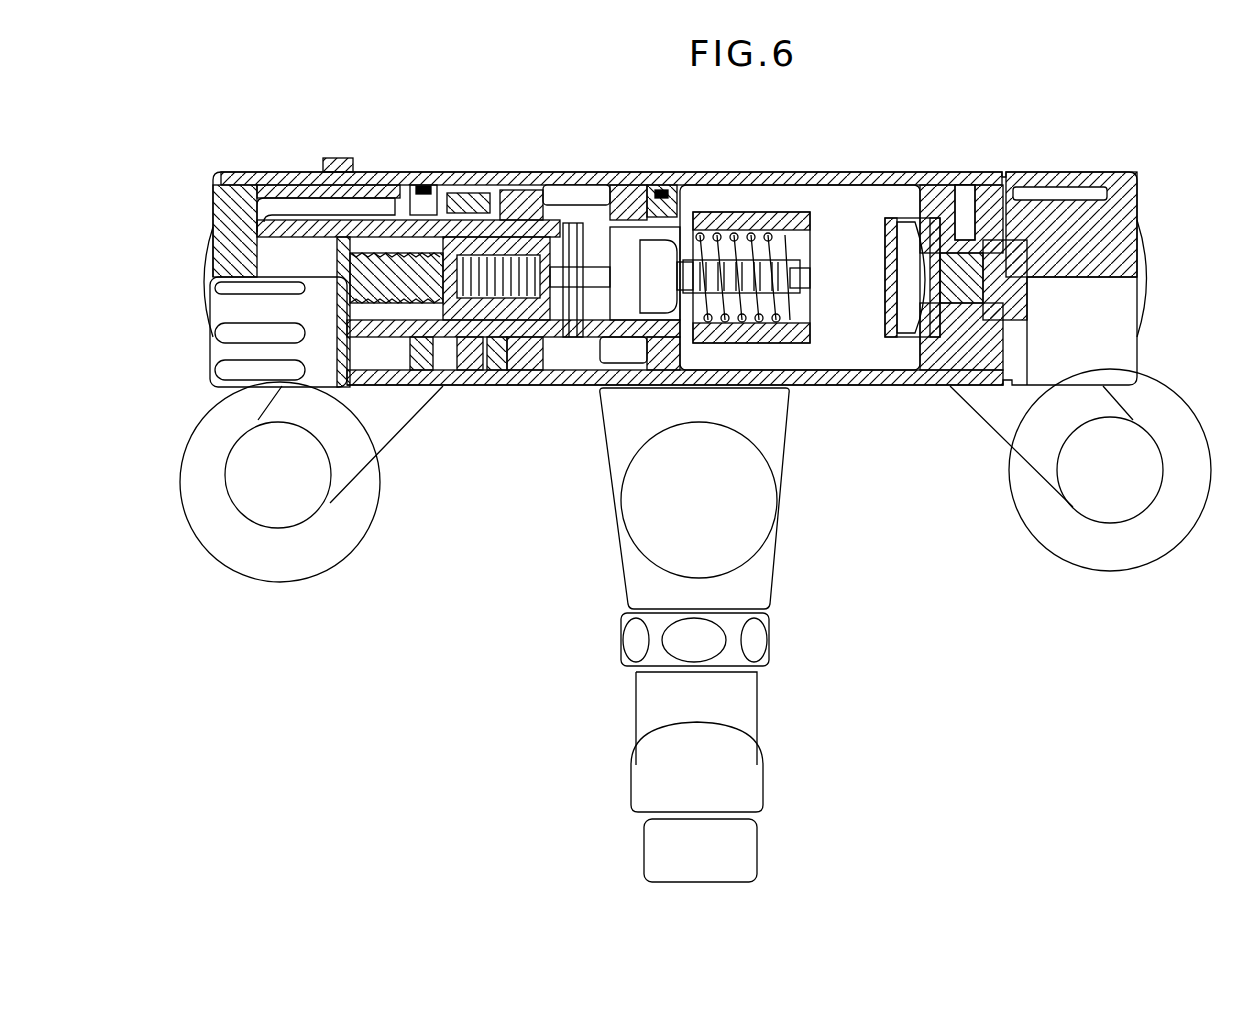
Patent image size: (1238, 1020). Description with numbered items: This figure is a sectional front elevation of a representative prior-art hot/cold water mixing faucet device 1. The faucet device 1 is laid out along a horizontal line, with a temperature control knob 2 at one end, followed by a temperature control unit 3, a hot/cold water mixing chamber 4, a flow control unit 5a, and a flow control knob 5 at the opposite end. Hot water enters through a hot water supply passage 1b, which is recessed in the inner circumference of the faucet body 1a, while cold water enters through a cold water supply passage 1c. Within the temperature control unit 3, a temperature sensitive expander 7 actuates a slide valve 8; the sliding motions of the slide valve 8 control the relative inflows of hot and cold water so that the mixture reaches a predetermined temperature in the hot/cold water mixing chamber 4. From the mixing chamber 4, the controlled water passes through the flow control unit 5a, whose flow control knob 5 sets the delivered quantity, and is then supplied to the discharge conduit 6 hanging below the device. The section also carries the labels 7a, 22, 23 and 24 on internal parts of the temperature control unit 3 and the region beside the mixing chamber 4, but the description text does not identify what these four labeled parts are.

The hot/cold water mixing faucet device 1 is at (1105, 142).
The faucet body 1a is at (822, 180).
The hot water supply passage 1b is at (655, 195).
The cold water supply passage 1c is at (580, 197).
The temperature control knob 2 is at (225, 303).
The temperature control unit 3 is at (725, 207).
The hot/cold water mixing chamber 4 is at (859, 208).
The flow control knob 5 is at (1133, 203).
The flow control unit 5a is at (967, 207).
The discharge conduit 6 is at (755, 777).
The temperature sensitive expander 7 is at (757, 287).
The spring seat plate 7a is at (583, 280).
The slide valve 8 is at (641, 215).
The adjusting nut 22 is at (490, 330).
The threaded shaft 23 is at (430, 290).
The sleeve 24 is at (977, 300).